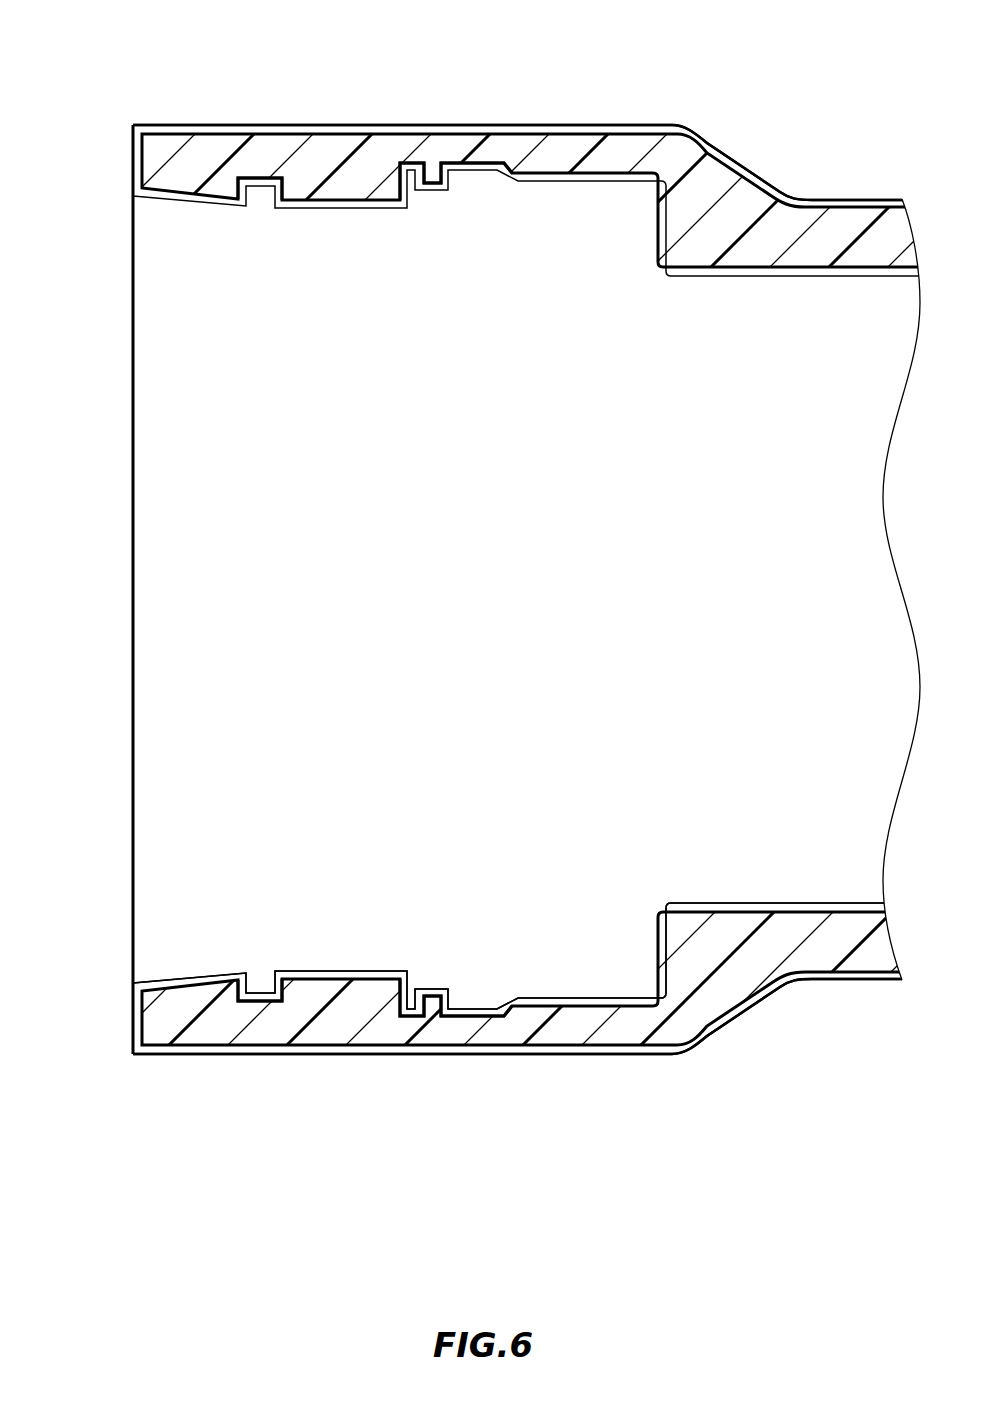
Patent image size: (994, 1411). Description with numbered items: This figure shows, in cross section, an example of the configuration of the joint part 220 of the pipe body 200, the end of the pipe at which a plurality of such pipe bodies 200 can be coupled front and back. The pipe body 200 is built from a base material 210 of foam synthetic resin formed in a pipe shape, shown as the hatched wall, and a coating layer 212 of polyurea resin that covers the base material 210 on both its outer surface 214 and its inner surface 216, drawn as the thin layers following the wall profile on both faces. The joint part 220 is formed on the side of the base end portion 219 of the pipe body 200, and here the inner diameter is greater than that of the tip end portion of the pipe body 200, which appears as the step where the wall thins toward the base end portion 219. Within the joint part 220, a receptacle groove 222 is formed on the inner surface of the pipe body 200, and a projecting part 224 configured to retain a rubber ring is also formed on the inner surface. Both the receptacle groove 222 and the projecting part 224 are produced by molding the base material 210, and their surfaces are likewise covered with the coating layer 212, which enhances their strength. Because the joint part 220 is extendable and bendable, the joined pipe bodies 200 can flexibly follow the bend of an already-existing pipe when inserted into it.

The pipe body 200 is at (500, 1293).
The base material 210 is at (330, 145).
The coating layer 212 is at (225, 124).
The outer surface 214 is at (378, 1085).
The inner surface 216 is at (342, 940).
The base end portion 219 is at (130, 162).
The joint part 220 is at (453, 95).
The receptacle groove 222 is at (258, 200).
The projecting part 224 is at (432, 192).